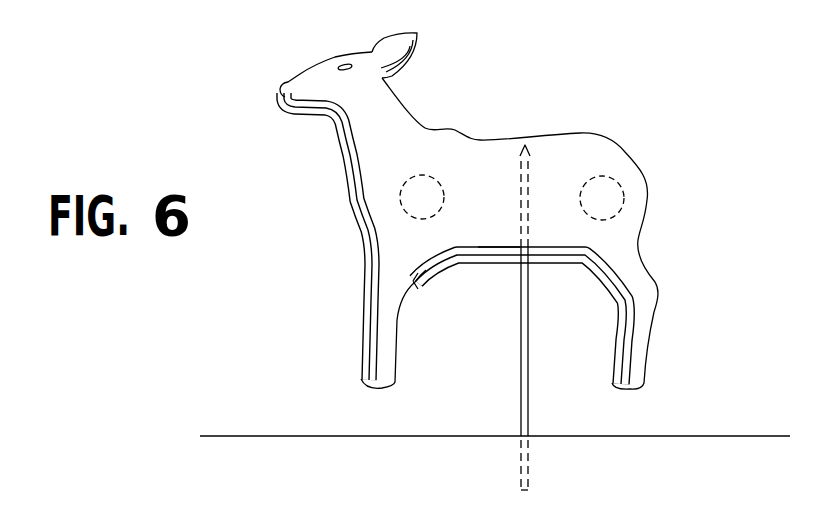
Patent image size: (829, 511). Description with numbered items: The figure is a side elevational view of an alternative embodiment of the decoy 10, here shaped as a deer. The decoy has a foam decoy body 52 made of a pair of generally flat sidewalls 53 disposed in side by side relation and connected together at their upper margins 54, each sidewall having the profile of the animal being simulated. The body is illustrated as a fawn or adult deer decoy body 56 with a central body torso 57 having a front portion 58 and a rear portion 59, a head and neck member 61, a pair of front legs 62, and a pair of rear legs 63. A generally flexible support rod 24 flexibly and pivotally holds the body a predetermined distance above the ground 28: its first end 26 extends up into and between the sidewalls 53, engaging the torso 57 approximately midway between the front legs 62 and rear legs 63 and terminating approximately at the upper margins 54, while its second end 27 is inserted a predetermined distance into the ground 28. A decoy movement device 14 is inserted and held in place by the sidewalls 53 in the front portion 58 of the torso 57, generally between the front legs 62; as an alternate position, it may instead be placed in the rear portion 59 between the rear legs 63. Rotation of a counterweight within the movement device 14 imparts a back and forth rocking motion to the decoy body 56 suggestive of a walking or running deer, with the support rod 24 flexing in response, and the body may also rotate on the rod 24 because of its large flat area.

The decoy 10 is at (491, 204).
The decoy movement device 14 is at (417, 216).
The support rod 24 is at (524, 375).
The first end 26 is at (528, 153).
The second end 27 is at (530, 475).
The ground 28 is at (708, 434).
The foam decoy body 52 is at (449, 122).
The sidewalls 53 is at (355, 207).
The upper margins 54 is at (493, 140).
The deer decoy body 56 is at (498, 237).
The central body torso 57 is at (473, 212).
The front portion 58 is at (382, 146).
The rear portion 59 is at (613, 157).
The head and neck member 61 is at (390, 110).
The front legs 62 is at (383, 347).
The rear legs 63 is at (643, 318).